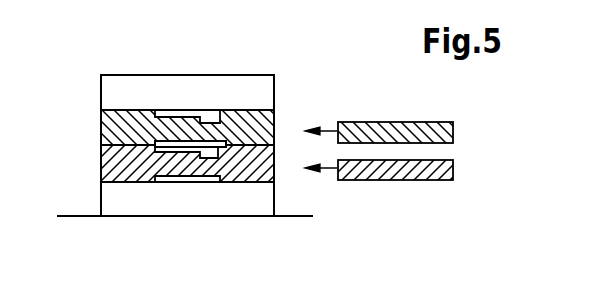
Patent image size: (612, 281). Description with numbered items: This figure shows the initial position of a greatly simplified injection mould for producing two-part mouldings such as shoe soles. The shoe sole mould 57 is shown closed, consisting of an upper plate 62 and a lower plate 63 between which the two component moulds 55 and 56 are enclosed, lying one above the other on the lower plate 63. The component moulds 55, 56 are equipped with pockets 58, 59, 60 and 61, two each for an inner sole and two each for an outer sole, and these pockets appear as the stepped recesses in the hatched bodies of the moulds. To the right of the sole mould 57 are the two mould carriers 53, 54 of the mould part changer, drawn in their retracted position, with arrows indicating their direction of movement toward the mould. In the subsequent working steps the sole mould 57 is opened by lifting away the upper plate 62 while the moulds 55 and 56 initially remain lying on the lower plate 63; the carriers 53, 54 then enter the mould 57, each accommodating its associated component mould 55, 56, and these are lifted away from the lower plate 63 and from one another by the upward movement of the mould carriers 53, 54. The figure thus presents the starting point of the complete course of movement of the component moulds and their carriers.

The mould carrier 53 is at (408, 128).
The mould carrier 54 is at (407, 173).
The component mould 55 is at (250, 122).
The component mould 56 is at (107, 156).
The shoe sole mould 57 is at (97, 121).
The pocket 58 is at (215, 118).
The pocket 59 is at (220, 156).
The pocket 60 is at (223, 148).
The pocket 61 is at (190, 184).
The upper plate 62 is at (122, 88).
The lower plate 63 is at (106, 202).